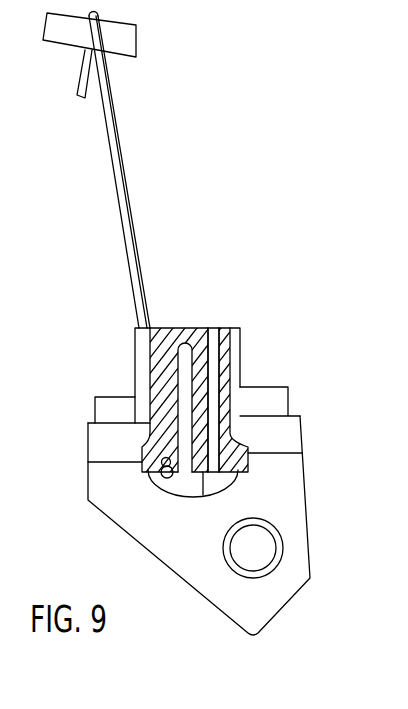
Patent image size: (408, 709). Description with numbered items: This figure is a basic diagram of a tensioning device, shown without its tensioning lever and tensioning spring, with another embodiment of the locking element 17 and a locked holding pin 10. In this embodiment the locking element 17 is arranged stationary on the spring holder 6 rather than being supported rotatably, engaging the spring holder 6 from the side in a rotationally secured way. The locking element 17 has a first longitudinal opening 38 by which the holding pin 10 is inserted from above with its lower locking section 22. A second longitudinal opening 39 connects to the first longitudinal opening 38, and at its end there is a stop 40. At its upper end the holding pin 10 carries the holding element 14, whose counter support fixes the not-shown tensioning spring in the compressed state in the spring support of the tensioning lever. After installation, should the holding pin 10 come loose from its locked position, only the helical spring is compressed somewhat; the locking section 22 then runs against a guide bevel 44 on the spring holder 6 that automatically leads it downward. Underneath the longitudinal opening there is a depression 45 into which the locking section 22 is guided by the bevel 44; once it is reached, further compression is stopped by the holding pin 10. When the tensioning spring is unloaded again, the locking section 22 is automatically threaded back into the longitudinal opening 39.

The spring holder 6 is at (297, 524).
The holding pin 10 is at (128, 192).
The holding element 14 is at (132, 43).
The locking element 17 is at (195, 368).
The locking section 22 is at (163, 478).
The first longitudinal opening 38 is at (217, 353).
The second longitudinal opening 39 is at (178, 370).
The stop 40 is at (185, 328).
The guide bevel 44 is at (175, 497).
The depression 45 is at (199, 500).